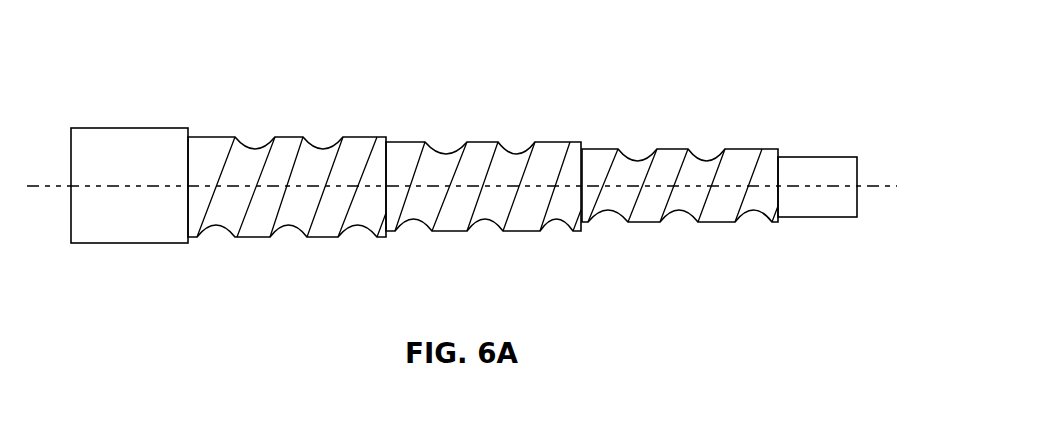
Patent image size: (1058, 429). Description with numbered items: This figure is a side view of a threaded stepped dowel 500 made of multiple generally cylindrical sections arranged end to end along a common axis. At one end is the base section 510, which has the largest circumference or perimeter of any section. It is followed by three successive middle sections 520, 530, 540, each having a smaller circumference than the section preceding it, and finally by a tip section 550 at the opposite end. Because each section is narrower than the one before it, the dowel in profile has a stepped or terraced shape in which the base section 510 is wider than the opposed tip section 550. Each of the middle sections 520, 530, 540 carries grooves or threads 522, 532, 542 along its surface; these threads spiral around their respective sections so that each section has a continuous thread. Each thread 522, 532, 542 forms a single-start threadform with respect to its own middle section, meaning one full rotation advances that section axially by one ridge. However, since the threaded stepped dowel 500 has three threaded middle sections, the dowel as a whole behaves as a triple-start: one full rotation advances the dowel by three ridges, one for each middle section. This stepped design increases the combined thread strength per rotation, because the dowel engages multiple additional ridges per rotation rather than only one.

The threaded stepped dowel 500 is at (792, 73).
The base section 510 is at (130, 148).
The middle section 520 is at (262, 207).
The thread 522 is at (252, 153).
The middle section 530 is at (478, 152).
The thread 532 is at (492, 205).
The middle section 540 is at (650, 203).
The thread 542 is at (698, 165).
The tip section 550 is at (822, 200).